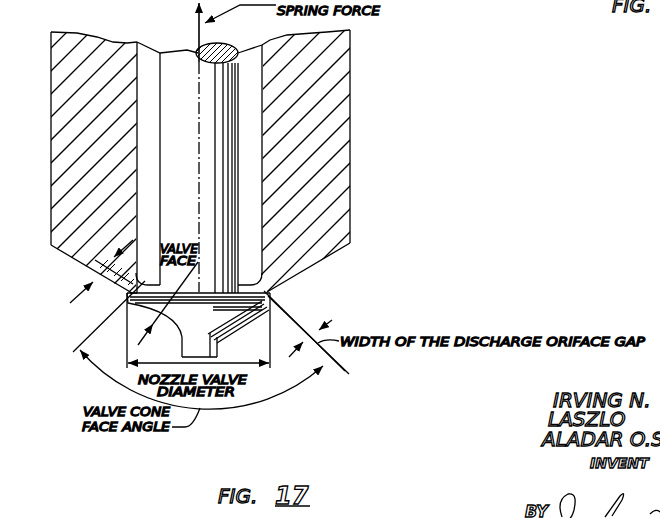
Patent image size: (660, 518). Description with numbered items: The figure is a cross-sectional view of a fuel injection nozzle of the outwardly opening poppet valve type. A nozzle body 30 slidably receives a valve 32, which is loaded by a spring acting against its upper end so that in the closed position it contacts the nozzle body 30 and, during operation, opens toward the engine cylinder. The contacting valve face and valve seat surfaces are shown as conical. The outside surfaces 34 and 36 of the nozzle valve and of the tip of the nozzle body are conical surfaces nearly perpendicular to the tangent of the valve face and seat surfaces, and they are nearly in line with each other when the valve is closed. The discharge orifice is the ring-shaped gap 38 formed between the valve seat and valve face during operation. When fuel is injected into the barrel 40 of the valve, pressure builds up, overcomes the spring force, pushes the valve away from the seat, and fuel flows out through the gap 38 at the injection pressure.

The nozzle body 30 is at (350, 88).
The valve 32 is at (258, 332).
The outside surface of the nozzle valve 34 is at (270, 294).
The outside surface of the nozzle body tip 36 is at (157, 283).
The ring-shaped gap 38 is at (252, 281).
The barrel 40 is at (156, 132).